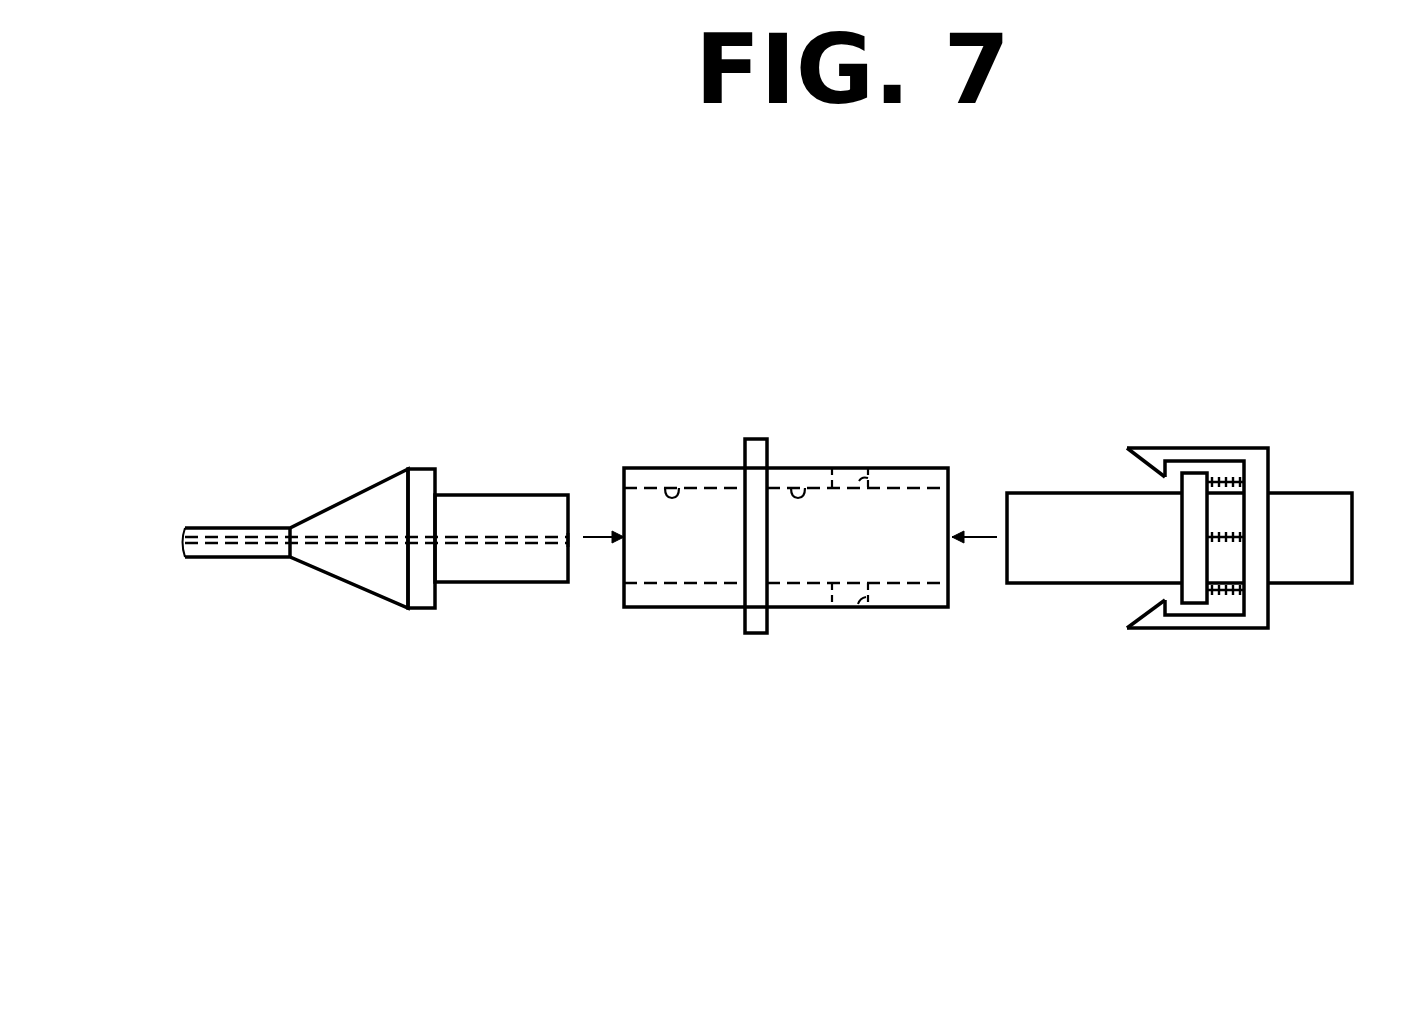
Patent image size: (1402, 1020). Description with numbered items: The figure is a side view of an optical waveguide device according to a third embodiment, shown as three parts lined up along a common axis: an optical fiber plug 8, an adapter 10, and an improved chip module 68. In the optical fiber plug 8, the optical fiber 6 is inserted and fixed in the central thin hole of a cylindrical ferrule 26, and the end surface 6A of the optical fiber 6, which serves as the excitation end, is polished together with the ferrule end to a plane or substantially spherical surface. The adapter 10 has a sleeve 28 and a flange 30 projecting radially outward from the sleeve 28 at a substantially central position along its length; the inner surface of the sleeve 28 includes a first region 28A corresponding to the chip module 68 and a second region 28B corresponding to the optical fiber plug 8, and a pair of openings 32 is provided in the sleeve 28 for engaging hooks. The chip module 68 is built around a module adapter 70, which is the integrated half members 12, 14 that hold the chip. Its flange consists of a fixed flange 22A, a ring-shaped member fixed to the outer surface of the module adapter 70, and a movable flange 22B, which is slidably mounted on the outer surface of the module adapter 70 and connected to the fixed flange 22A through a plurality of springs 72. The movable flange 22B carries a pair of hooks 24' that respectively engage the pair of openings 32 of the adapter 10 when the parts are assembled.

The optical fiber 6 is at (462, 530).
The end surface 6A is at (571, 537).
The optical fiber plug 8 is at (354, 452).
The adapter 10 is at (769, 510).
The half member 12 is at (1179, 538).
The half member 14 is at (1042, 573).
The fixed flange 22A is at (1187, 523).
The movable flange 22B is at (1272, 608).
The hooks 24' is at (1141, 572).
The ferrule 26 is at (500, 570).
The sleeve 28 is at (668, 572).
The first region 28A is at (803, 485).
The second region 28B is at (667, 485).
The flange 30 is at (748, 630).
The openings 32 is at (858, 466).
The chip module 68 is at (1144, 557).
The module adapter 70 is at (1142, 624).
The springs 72 is at (1221, 480).